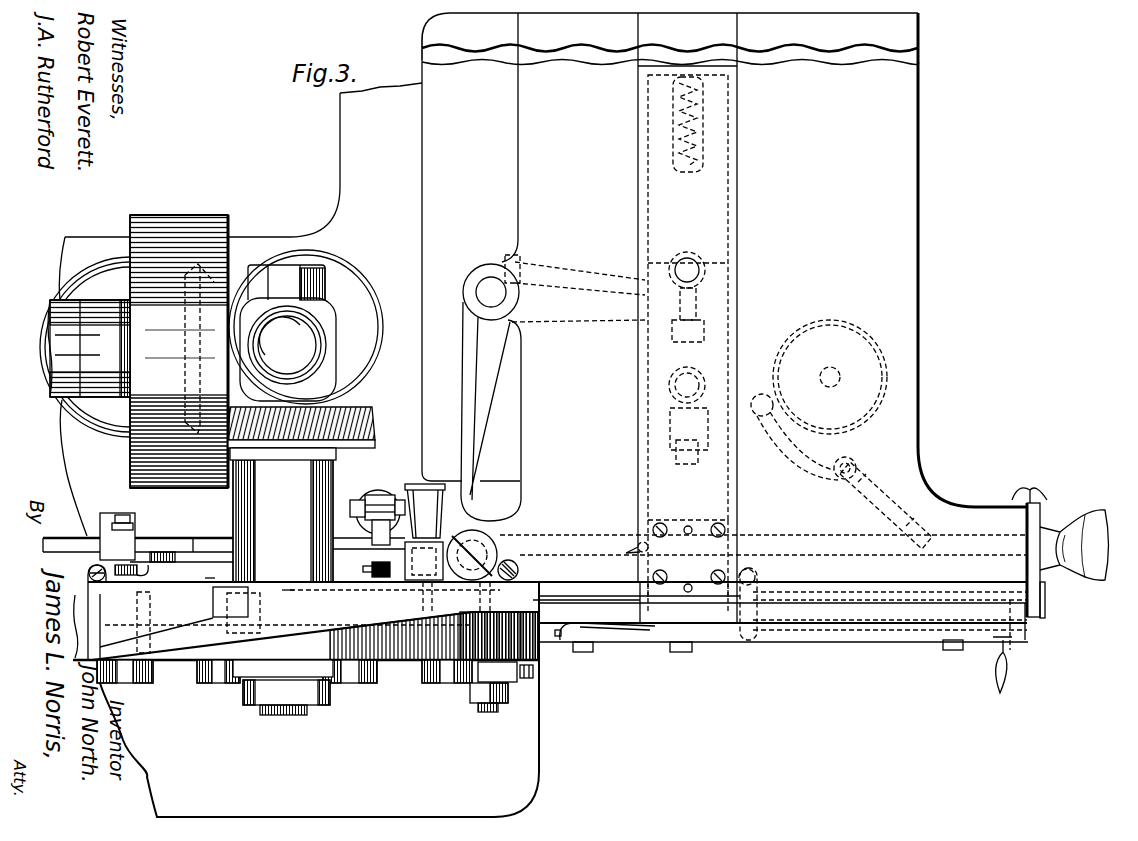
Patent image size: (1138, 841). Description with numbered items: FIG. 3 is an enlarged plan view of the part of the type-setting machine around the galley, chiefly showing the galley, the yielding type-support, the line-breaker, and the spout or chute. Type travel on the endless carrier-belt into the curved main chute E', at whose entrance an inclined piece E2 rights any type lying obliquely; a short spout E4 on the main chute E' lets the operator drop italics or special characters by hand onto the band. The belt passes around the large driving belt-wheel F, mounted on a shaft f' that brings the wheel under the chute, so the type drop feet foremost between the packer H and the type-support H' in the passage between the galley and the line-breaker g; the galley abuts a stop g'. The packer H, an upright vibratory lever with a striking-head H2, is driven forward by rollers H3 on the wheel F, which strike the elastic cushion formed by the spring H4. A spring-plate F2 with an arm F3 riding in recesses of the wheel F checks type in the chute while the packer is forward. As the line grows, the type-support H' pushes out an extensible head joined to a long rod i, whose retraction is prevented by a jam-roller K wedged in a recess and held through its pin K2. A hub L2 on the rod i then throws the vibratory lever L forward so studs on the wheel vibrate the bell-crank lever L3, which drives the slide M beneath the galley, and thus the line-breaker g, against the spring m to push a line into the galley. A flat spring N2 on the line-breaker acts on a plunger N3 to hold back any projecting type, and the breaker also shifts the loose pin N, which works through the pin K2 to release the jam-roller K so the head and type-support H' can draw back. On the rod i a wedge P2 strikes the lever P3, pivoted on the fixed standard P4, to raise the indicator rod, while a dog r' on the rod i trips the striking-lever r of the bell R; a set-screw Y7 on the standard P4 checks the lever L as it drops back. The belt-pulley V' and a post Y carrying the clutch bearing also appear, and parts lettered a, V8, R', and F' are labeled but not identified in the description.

The spring m is at (695, 128).
The slide M is at (688, 336).
The connecting link a is at (688, 361).
The bell R is at (830, 377).
The striking-lever r is at (841, 471).
The dog r' is at (652, 547).
The bell-crank lever L3 is at (553, 388).
The post Y is at (306, 327).
The belt-pulley V' is at (179, 351).
The bevel gear V8 is at (372, 421).
The hub or sleeve L2 is at (136, 528).
The curved chute E' is at (535, 612).
The wedge or key P2 is at (88, 583).
The short spout E4 is at (238, 622).
The inclined piece E2 is at (163, 635).
The set-screw Y7 is at (362, 495).
The fixed standard P4 is at (380, 497).
The vibratory lever L is at (425, 532).
The lever P3 is at (372, 572).
The cam disk R' is at (499, 542).
The stop g' is at (529, 570).
The striking-head H2 is at (535, 600).
The line-breaker g is at (784, 587).
The pin N is at (738, 645).
The flat spring N2 is at (557, 640).
The dovetailed step or plunger N3 is at (545, 660).
The type-support H' is at (617, 637).
The wheels or rollers H3 is at (210, 688).
The driving belt-wheel F is at (360, 689).
The shaft f' is at (283, 700).
The spring H4 is at (505, 672).
The packer H is at (500, 697).
The rod i is at (194, 545).
The spring-plate F2 is at (208, 577).
The arm or stud F3 is at (288, 590).
The shaft F' is at (288, 634).
The jam-roller K is at (1043, 597).
The stem or pin K2 is at (1012, 680).